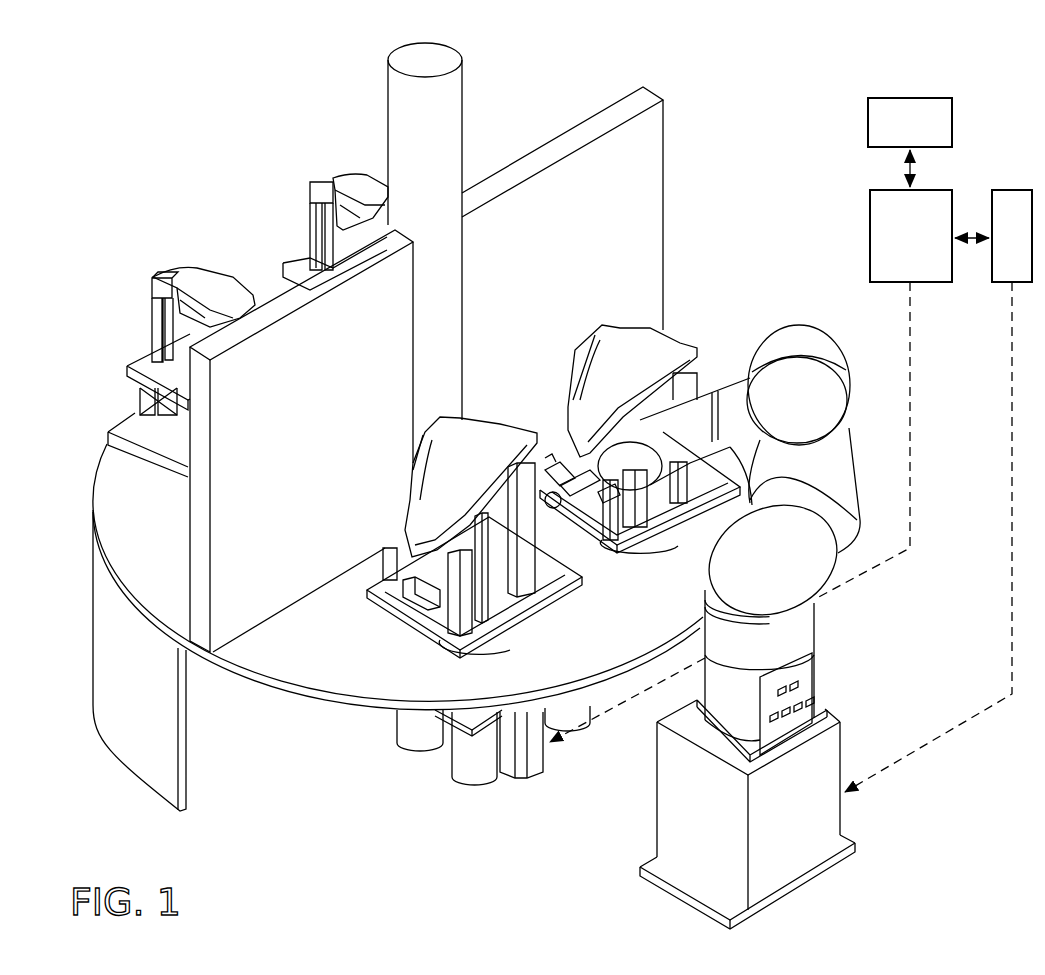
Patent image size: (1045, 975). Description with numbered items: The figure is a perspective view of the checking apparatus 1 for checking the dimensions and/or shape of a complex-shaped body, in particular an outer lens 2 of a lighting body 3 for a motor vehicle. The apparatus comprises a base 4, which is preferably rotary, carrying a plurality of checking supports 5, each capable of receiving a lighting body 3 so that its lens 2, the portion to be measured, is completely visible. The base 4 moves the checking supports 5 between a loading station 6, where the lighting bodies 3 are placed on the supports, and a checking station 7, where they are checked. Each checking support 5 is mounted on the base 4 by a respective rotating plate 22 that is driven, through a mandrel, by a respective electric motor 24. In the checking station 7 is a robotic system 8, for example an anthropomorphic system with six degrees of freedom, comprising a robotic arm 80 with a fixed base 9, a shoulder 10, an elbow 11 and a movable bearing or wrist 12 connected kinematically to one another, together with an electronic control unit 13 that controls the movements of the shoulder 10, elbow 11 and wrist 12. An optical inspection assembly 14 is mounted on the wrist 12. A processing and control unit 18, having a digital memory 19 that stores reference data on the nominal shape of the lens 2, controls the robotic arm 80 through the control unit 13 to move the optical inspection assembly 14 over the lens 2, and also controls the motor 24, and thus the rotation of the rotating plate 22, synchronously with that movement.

The checking apparatus 1 is at (764, 92).
The outer lens 2 is at (631, 338).
The lighting body 3 is at (317, 176).
The base 4 is at (370, 697).
The checking support 5 is at (286, 232).
The loading station 6 is at (78, 671).
The checking station 7 is at (265, 700).
The robotic system 8 is at (876, 594).
The fixed base 9 is at (797, 846).
The shoulder 10 is at (802, 627).
The elbow 11 is at (820, 335).
The wrist 12 is at (600, 558).
The electronic control unit 13 is at (1012, 236).
The optical inspection assembly 14 is at (548, 436).
The processing and control unit 18 is at (929, 216).
The digital memory 19 is at (910, 122).
The rotating plate 22 is at (676, 511).
The electric motor 24 is at (533, 757).
The robotic arm 80 is at (860, 828).